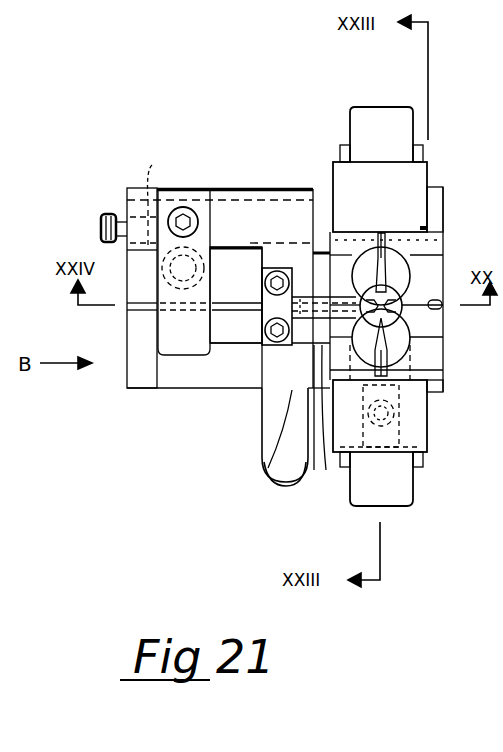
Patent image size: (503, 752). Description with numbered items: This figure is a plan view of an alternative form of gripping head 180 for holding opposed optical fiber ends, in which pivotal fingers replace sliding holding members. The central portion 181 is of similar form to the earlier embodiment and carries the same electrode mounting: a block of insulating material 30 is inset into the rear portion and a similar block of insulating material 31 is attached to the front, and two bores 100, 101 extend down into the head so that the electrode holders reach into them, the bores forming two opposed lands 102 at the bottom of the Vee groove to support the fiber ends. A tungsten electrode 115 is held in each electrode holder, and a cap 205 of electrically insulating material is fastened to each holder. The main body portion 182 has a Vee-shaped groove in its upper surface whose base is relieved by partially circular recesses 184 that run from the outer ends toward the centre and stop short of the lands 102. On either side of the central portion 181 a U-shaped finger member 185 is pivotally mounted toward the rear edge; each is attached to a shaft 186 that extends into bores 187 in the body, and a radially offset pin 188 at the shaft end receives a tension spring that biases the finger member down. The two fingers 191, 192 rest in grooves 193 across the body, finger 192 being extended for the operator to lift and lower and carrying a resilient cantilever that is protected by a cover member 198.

The gripping head 180 is at (444, 107).
The recess 184 is at (127, 308).
The finger member 185 is at (243, 215).
The shaft 186 is at (322, 245).
The bore 187 is at (122, 205).
The central portion 181 is at (325, 232).
The radially offset pin 188 is at (100, 228).
The finger 191 is at (203, 383).
The main body portion 182 is at (260, 380).
The groove 193 is at (158, 378).
The finger 192 is at (262, 458).
The cover member 198 is at (283, 400).
The block of insulating material 30 is at (415, 178).
The block of insulating material 31 is at (427, 413).
The cap 205 is at (378, 124).
The bore 100 is at (443, 197).
The bore 101 is at (410, 372).
The land 102 is at (340, 300).
The tungsten electrode 115 is at (352, 330).